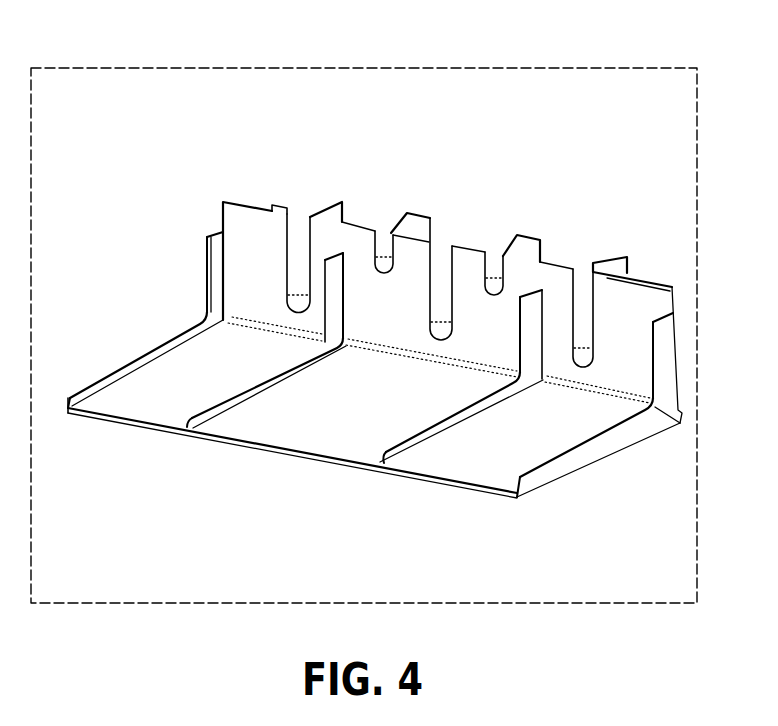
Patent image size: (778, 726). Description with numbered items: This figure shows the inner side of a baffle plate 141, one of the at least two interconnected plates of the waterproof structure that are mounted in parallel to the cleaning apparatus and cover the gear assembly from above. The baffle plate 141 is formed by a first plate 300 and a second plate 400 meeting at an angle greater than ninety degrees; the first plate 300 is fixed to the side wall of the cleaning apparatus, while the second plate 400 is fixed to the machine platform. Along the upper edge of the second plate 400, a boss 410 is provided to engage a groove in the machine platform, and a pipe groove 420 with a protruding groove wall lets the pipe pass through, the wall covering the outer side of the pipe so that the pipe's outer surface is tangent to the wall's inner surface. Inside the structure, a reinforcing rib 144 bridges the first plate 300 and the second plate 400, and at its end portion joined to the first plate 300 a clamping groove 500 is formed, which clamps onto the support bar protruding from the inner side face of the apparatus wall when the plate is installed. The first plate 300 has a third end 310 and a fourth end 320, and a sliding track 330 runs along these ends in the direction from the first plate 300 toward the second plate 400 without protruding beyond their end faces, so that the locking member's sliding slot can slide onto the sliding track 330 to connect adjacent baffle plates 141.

The baffle plate 141 is at (283, 68).
The second plate 400 is at (627, 294).
The boss 410 is at (272, 207).
The pipe groove 420 is at (310, 203).
The first plate 300 is at (170, 340).
The third end 310 is at (173, 382).
The clamping groove 500 is at (71, 413).
The sliding track 330 is at (76, 418).
The fourth end 320 is at (603, 452).
The reinforcing rib 144 is at (77, 423).